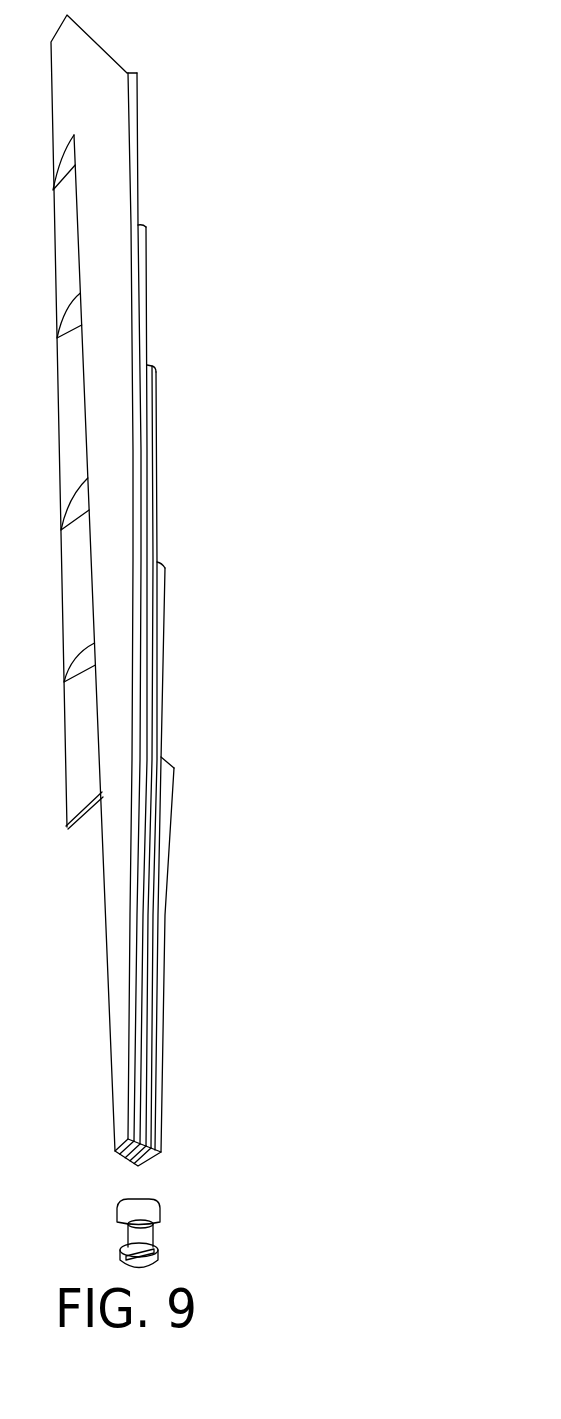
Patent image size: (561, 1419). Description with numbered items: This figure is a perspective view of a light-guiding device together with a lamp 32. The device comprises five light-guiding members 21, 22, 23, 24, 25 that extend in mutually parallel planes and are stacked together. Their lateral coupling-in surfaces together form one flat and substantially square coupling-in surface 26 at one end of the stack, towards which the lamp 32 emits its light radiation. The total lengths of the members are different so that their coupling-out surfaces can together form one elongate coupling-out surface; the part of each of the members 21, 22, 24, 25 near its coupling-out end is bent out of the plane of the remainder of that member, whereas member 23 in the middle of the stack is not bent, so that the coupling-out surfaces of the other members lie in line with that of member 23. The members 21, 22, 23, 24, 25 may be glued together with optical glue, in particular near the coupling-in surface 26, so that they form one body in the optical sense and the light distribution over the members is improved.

The light-guiding member 21 is at (172, 852).
The light-guiding member 22 is at (172, 668).
The light-guiding member 23 is at (165, 512).
The light-guiding member 24 is at (147, 330).
The light-guiding member 25 is at (115, 880).
The coupling-in surface 26 is at (122, 1158).
The lamp 32 is at (142, 1233).